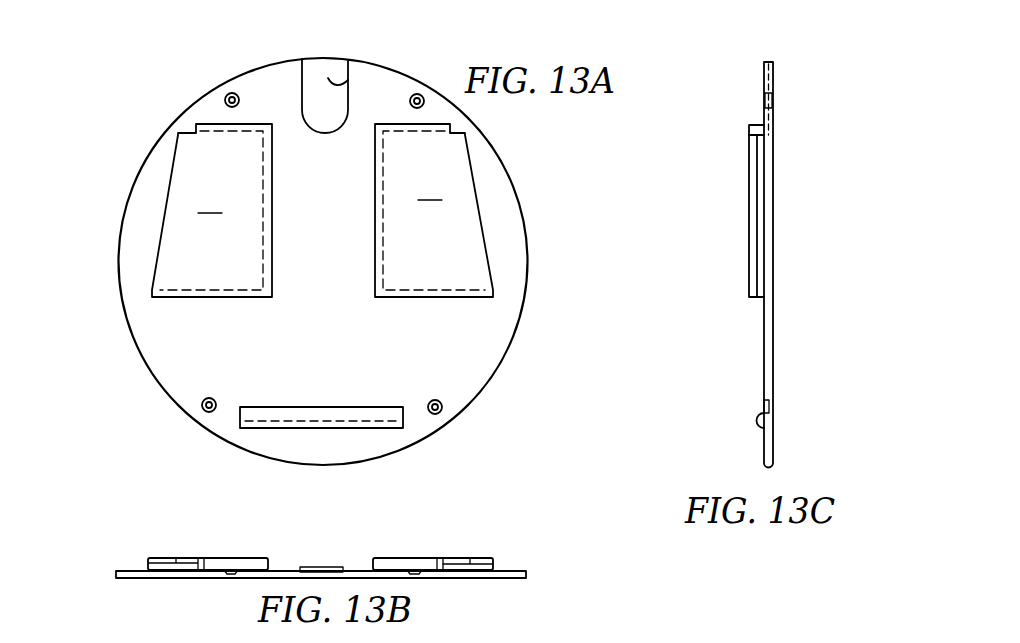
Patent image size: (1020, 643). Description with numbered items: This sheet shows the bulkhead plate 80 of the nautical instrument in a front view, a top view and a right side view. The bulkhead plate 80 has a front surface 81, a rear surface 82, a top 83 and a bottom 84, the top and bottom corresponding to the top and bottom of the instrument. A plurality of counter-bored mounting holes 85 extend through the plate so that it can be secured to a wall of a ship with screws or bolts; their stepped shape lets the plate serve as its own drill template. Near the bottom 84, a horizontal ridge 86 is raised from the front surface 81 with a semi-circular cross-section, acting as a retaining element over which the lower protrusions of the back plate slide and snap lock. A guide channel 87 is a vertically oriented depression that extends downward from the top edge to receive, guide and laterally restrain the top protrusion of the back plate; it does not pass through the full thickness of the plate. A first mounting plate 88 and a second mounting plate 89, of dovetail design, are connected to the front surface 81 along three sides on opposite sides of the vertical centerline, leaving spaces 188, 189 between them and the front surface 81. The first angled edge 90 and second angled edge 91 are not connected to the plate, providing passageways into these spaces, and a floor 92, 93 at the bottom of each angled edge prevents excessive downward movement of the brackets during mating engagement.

In FIG. 13A, the bulkhead plate 80 is at (122, 92).
In FIG. 13C, the bulkhead plate 80 is at (840, 118).
In FIG. 13B, the bulkhead plate 80 is at (548, 563).
In FIG. 13A, the front surface 81 is at (516, 268).
In FIG. 13C, the front surface 81 is at (761, 352).
In FIG. 13C, the rear surface 82 is at (776, 331).
In FIG. 13B, the rear surface 82 is at (156, 580).
In FIG. 13A, the top 83 is at (330, 58).
In FIG. 13C, the top 83 is at (768, 60).
In FIG. 13A, the bottom 84 is at (330, 465).
In FIG. 13C, the bottom 84 is at (770, 470).
In FIG. 13A, the mounting holes 85 is at (231, 92).
In FIG. 13C, the mounting holes 85 is at (772, 101).
In FIG. 13A, the horizontal ridge 86 is at (270, 430).
In FIG. 13C, the horizontal ridge 86 is at (758, 422).
In FIG. 13B, the horizontal ridge 86 is at (340, 566).
In FIG. 13A, the guide channel 87 is at (348, 80).
In FIG. 13B, the guide channel 87 is at (318, 566).
In FIG. 13A, the first mounting plate 88 is at (212, 210).
In FIG. 13B, the first mounting plate 88 is at (410, 557).
In FIG. 13A, the second mounting plate 89 is at (434, 210).
In FIG. 13C, the second mounting plate 89 is at (747, 168).
In FIG. 13B, the second mounting plate 89 is at (206, 558).
In FIG. 13A, the first angled edge 90 is at (162, 202).
In FIG. 13B, the first angled edge 90 is at (462, 557).
In FIG. 13A, the second angled edge 91 is at (475, 162).
In FIG. 13C, the second angled edge 91 is at (757, 250).
In FIG. 13B, the second angled edge 91 is at (162, 556).
In FIG. 13A, the floor 92 is at (162, 283).
In FIG. 13A, the floor 93 is at (460, 282).
In FIG. 13B, the space 188 is at (494, 564).
In FIG. 13C, the space 189 is at (758, 205).
In FIG. 13B, the space 189 is at (148, 564).